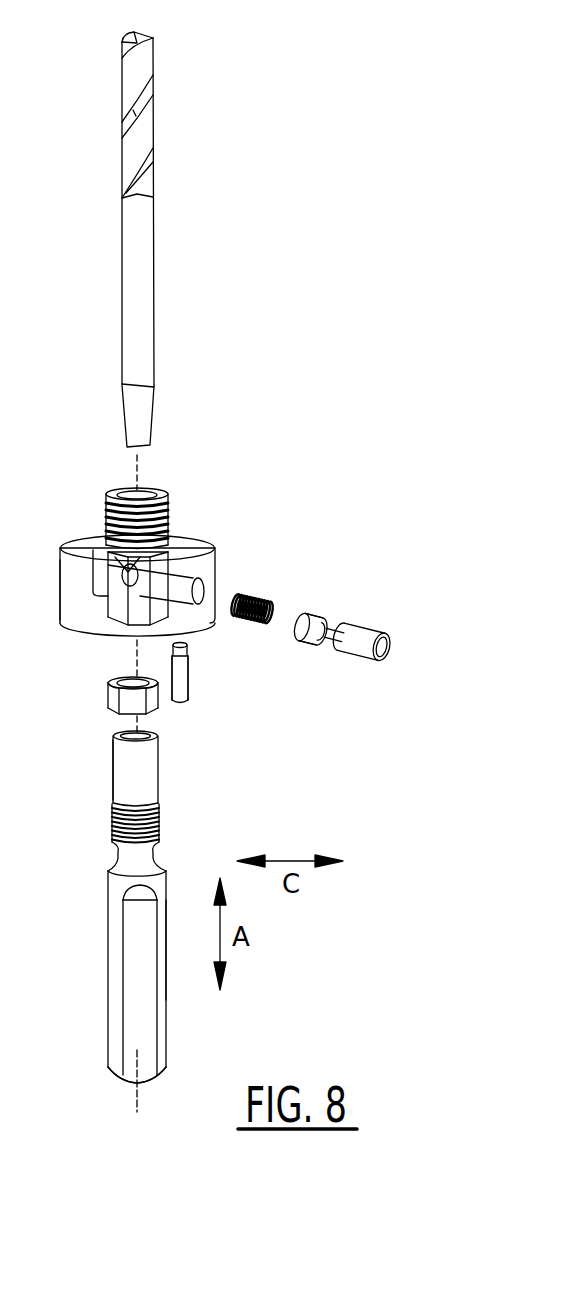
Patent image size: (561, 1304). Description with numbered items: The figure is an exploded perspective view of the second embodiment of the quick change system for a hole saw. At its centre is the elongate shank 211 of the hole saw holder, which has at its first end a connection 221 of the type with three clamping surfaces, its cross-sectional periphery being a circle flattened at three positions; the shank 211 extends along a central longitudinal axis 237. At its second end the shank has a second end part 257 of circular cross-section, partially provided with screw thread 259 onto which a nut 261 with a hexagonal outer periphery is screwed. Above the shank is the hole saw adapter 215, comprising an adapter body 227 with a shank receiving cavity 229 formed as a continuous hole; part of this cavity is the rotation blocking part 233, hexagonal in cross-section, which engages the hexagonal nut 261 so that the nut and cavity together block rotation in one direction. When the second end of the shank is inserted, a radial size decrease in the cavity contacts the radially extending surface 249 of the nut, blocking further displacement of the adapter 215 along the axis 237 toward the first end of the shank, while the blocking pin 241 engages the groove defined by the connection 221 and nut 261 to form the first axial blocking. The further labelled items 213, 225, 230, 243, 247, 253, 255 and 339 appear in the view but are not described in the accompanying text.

The elongate shank 211 is at (220, 817).
The drill bit 213 is at (206, 234).
The hole saw adapter 215 is at (58, 488).
The connection 221 is at (95, 1040).
The tapered shank 225 is at (146, 407).
The adapter body 227 is at (197, 540).
The shank receiving cavity 229 is at (113, 472).
The threaded collar 230 is at (170, 487).
The rotation blocking part 233 is at (93, 592).
The central longitudinal axis 237 is at (163, 1078).
The blocking pin 241 is at (367, 632).
The pin head 243 is at (341, 590).
The transverse bore 247 is at (205, 588).
The radially extending surface 249 is at (163, 656).
The spring 253 is at (263, 622).
The pin 255 is at (188, 680).
The second end part 257 is at (95, 727).
The screw thread 259 is at (152, 787).
The nut 261 is at (148, 702).
The axis 339 is at (135, 653).